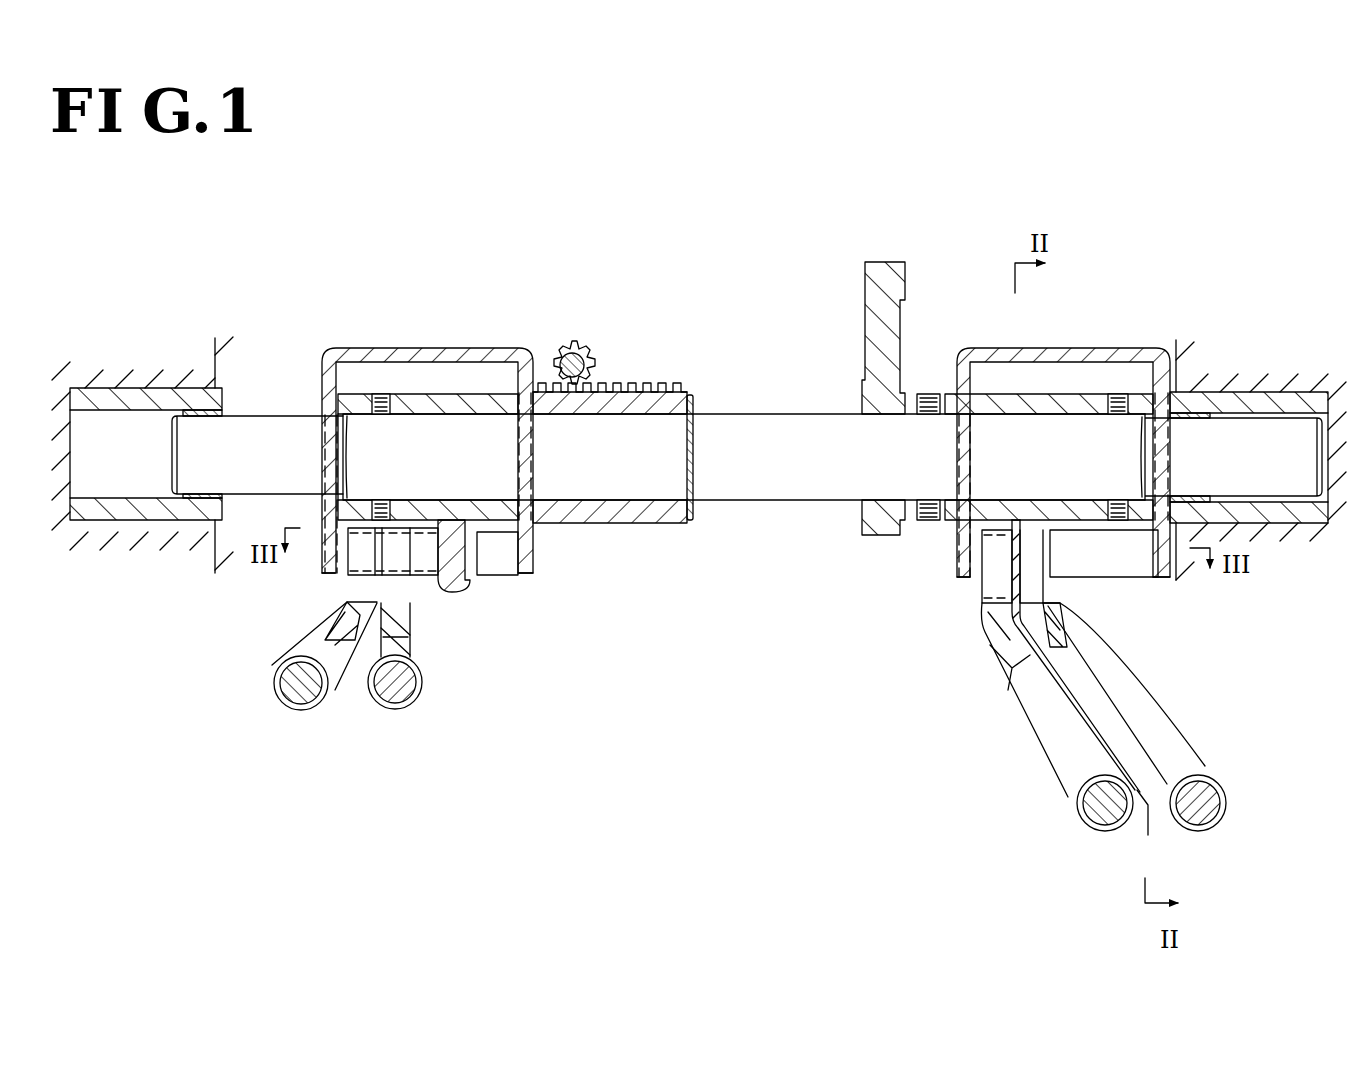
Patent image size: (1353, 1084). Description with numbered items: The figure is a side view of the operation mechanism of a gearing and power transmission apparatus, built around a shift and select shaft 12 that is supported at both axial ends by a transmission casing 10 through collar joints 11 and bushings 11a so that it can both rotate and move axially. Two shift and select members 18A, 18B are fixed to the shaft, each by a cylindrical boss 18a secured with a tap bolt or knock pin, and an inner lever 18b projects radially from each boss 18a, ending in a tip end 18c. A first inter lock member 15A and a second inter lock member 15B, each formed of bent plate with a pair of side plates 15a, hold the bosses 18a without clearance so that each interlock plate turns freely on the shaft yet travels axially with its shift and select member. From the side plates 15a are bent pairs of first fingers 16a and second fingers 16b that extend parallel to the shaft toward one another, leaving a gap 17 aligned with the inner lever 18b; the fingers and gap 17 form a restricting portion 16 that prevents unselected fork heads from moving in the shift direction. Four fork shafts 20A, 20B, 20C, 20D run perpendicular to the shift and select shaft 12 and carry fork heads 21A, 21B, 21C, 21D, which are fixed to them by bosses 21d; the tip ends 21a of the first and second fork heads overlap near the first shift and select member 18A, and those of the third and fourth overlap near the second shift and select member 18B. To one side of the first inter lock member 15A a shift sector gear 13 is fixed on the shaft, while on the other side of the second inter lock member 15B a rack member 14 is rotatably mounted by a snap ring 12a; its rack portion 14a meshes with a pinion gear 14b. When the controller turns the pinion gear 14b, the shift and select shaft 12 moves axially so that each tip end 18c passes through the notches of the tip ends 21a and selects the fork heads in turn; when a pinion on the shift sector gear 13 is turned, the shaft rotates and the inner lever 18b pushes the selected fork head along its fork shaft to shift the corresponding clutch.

The transmission casing 10 is at (92, 378).
The collar joint 11 is at (166, 385).
The bushing 11a is at (195, 492).
The shift and select shaft 12 is at (778, 497).
The snap ring 12a is at (691, 398).
The shift sector gear 13 is at (868, 345).
The rack member 14 is at (640, 522).
The rack portion 14a is at (612, 385).
The pinion gear 14b is at (577, 340).
The side plate 15a is at (340, 397).
The first inter lock member 15A is at (1125, 345).
The second inter lock member 15B is at (388, 345).
The restricting portion 16 is at (428, 525).
The first finger 16a is at (430, 602).
The second finger 16b is at (538, 570).
The gap 17 is at (512, 575).
The boss 18a is at (358, 395).
The first shift and select member 18A is at (1030, 392).
The inner lever 18b is at (458, 520).
The second shift and select member 18B is at (465, 395).
The tip end of inner lever 18c is at (462, 592).
The first fork shaft 20A is at (1228, 800).
The second fork shaft 20B is at (1076, 800).
The third fork shaft 20C is at (395, 712).
The fourth fork shaft 20D is at (276, 690).
The tip end 21a is at (340, 583).
The first fork head 21A is at (1178, 730).
The second fork head 21B is at (1018, 715).
The third fork head 21C is at (374, 650).
The fourth fork head 21D is at (298, 645).
The boss 21d is at (288, 714).